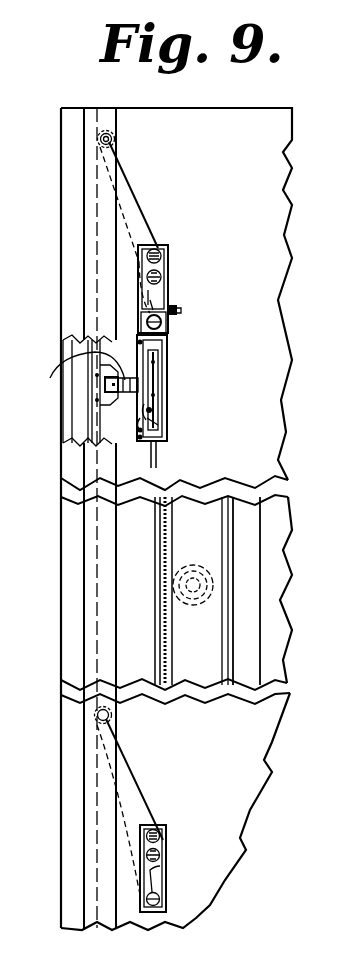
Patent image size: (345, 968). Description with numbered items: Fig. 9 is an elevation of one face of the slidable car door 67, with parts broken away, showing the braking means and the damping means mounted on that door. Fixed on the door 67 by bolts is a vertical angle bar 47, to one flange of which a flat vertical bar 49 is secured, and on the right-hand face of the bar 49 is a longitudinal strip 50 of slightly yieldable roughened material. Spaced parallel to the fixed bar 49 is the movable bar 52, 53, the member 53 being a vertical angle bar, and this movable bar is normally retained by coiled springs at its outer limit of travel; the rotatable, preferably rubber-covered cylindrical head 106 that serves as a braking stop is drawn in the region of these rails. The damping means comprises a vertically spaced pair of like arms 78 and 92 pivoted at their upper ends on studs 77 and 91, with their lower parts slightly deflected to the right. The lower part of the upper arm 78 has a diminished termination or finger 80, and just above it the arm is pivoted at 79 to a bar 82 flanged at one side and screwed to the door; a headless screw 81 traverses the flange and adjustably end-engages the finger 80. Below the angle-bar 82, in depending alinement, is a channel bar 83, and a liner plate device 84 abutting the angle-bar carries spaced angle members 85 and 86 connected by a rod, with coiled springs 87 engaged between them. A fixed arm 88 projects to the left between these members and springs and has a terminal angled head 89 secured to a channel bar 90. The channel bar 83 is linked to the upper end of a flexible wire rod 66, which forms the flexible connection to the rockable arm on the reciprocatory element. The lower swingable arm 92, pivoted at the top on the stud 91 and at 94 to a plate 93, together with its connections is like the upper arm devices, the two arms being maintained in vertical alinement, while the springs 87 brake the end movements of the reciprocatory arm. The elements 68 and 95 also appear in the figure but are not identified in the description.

The vertical angle bar 47 is at (158, 664).
The flat vertical bar 49 is at (165, 660).
The longitudinal strip 50 is at (168, 625).
The movable bar 52 is at (224, 520).
The vertical angle bar 53 is at (232, 663).
The flexible wire rod 66 is at (156, 456).
The slidable door 67 is at (176, 519).
The frame member 68 is at (84, 157).
The stud 77 is at (116, 139).
The upper arm 78 is at (128, 172).
The pivot 79 is at (161, 270).
The diminished termination 80 is at (160, 288).
The headless screw 81 is at (181, 309).
The bar 82 is at (165, 245).
The channel bar 83 is at (168, 350).
The liner plate device 84 is at (160, 370).
The angle member 85 is at (163, 388).
The angle member 86 is at (160, 405).
The coiled springs 87 is at (160, 420).
The fixed arm 88 is at (71, 372).
The terminal angled head 89 is at (102, 398).
The channel bar 90 is at (75, 415).
The stud 91 is at (112, 716).
The swingable arm 92 is at (125, 745).
The plate 93 is at (160, 826).
The pivot 94 is at (160, 848).
The cable anchor 95 is at (160, 868).
The cylindrical head 106 is at (192, 578).